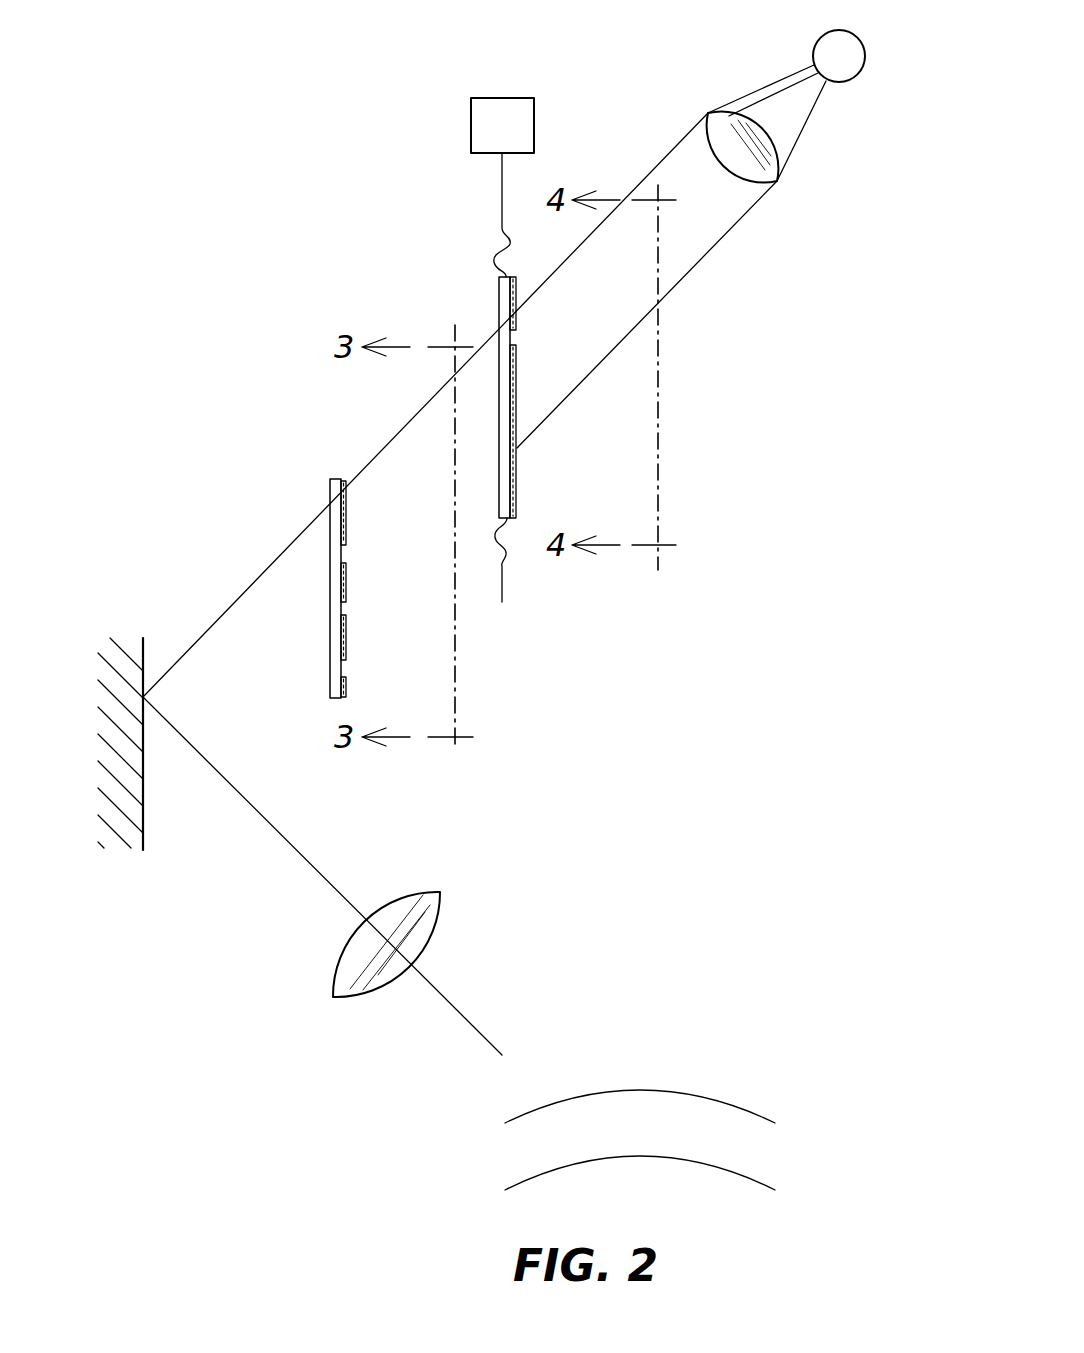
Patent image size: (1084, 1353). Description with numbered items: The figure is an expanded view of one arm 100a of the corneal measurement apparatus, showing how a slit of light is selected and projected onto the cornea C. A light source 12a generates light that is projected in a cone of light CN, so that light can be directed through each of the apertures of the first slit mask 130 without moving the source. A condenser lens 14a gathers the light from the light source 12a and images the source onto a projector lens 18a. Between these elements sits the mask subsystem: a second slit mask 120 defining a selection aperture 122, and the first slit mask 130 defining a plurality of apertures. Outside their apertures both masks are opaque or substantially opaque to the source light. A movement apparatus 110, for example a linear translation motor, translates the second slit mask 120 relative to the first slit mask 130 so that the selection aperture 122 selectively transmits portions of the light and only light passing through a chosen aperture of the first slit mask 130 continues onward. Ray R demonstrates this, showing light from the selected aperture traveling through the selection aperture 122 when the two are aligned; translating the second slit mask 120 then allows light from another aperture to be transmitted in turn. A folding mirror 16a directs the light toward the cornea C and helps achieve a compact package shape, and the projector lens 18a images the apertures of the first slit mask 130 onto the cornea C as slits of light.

The imaging apparatus 100a is at (352, 247).
The light source 12a is at (812, 46).
The condenser lens 14a is at (781, 183).
The cone of light CN is at (760, 80).
The folding mirror 16a is at (144, 840).
The projector lens 18a is at (337, 998).
The ray R is at (273, 566).
The cornea C is at (663, 1090).
The movement apparatus 110 is at (470, 128).
The second slit mask 120 is at (496, 276).
The selection aperture 122 is at (514, 338).
The first slit mask 130 is at (326, 478).